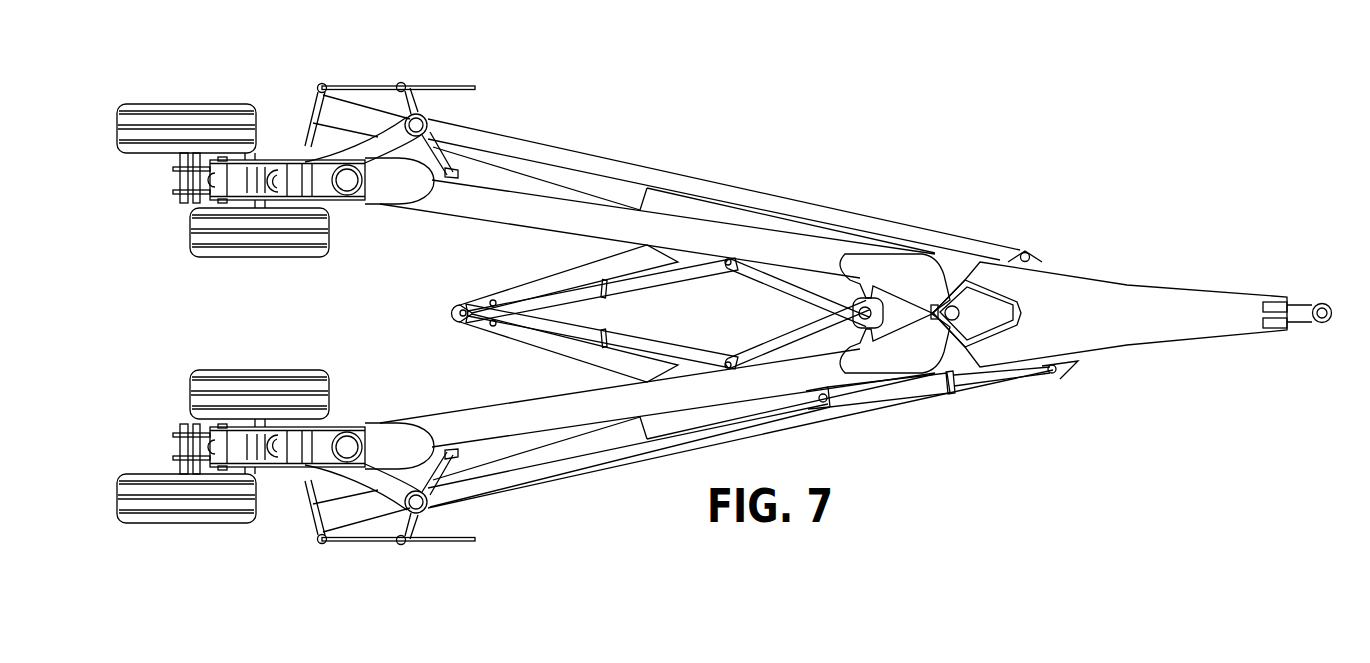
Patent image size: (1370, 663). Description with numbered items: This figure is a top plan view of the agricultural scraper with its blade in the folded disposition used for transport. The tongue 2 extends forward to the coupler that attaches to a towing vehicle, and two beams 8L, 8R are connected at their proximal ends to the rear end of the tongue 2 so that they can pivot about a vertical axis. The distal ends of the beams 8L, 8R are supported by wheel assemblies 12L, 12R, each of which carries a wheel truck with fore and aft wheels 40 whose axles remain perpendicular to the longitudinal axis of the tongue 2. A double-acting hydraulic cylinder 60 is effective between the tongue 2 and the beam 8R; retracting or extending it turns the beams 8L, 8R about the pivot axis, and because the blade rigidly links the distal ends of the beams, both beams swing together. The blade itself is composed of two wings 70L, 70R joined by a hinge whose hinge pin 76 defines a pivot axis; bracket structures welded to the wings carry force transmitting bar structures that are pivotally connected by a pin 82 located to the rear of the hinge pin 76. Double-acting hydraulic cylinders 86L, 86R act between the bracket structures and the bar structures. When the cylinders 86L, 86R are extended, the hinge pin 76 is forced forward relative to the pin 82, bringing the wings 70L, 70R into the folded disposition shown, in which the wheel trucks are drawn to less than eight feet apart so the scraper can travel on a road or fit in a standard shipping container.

The tongue 2 is at (1153, 298).
The left beam 8L is at (490, 213).
The right beam 8R is at (503, 410).
The left wheel assembly 12L is at (173, 227).
The right wheel assembly 12R is at (171, 400).
The wheels 40 is at (187, 103).
The double-acting hydraulic cylinder 60 is at (893, 395).
The left wing 70L is at (357, 115).
The right wing 70R is at (365, 512).
The hinge pin 76 is at (872, 312).
The pin 82 is at (454, 313).
The left double-acting hydraulic cylinder 86L is at (667, 282).
The right double-acting hydraulic cylinder 86R is at (652, 342).